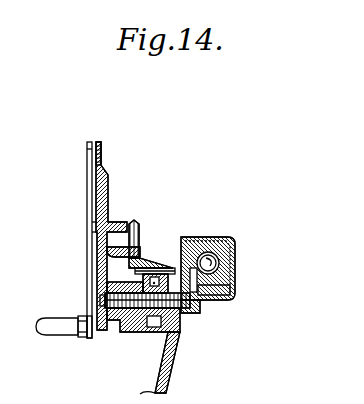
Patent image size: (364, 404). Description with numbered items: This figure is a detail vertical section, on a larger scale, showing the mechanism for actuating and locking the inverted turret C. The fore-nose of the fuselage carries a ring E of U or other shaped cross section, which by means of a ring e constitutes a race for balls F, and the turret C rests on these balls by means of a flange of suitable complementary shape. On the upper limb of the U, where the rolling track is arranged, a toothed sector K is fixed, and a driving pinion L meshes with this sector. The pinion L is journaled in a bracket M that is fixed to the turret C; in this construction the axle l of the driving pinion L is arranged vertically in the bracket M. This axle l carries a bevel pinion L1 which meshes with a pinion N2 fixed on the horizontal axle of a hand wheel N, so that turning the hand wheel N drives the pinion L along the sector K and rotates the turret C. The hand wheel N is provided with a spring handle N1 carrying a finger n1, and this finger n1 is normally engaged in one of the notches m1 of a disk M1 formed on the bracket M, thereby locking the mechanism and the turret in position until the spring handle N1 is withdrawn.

The hand wheel N is at (88, 191).
The spring handle N1 is at (58, 316).
The pinion N2 is at (134, 222).
The finger n1 is at (88, 338).
The bracket M is at (146, 333).
The disk M1 is at (108, 178).
The notches m1 is at (99, 143).
The driving pinion L is at (120, 322).
The bevel pinion L1 is at (152, 260).
The axle l is at (157, 276).
The ring E is at (222, 240).
The balls F is at (218, 260).
The ring e is at (233, 273).
The toothed sector K is at (212, 315).
The turret C is at (172, 376).